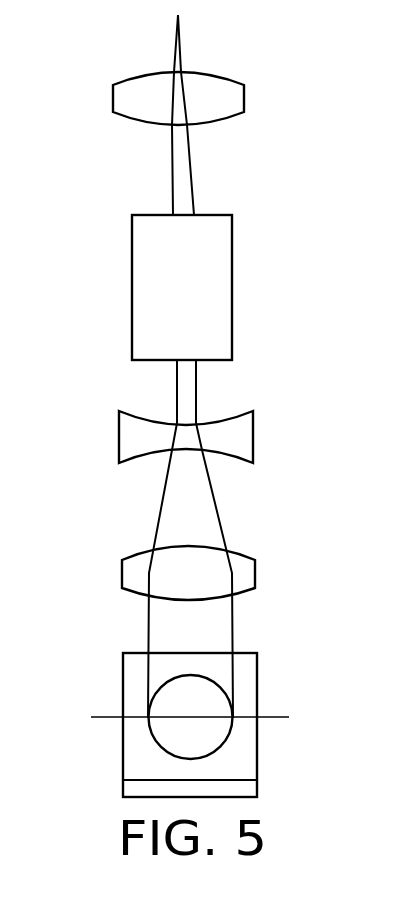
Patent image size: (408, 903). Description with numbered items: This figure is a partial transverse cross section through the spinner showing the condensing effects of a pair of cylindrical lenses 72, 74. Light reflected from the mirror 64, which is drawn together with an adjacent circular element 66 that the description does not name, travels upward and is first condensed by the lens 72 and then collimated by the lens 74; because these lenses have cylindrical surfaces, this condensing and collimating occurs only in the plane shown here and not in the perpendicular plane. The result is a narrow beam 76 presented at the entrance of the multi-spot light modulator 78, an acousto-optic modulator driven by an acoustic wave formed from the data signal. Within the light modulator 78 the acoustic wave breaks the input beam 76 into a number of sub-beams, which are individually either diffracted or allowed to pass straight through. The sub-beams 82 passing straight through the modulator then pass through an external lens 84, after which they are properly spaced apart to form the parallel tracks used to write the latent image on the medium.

The external lens 84 is at (112, 97).
The sub-beams 82 is at (172, 178).
The multi-spot light modulator 78 is at (132, 281).
The narrow beam 76 is at (175, 392).
The cylindrical lens 74 is at (119, 436).
The cylindrical lens 72 is at (122, 574).
The mirror 64 is at (123, 691).
The spherical element 66 is at (157, 744).